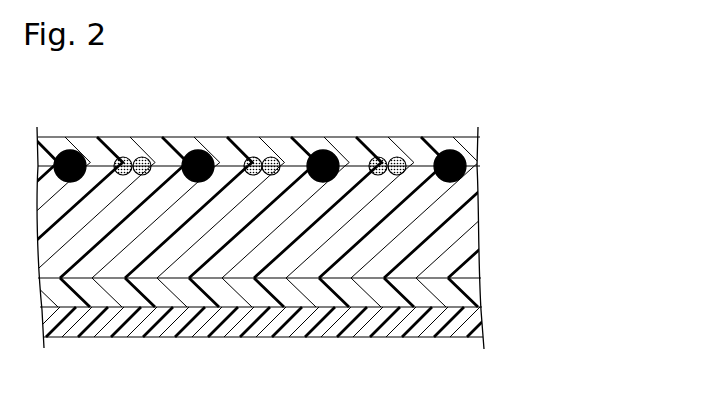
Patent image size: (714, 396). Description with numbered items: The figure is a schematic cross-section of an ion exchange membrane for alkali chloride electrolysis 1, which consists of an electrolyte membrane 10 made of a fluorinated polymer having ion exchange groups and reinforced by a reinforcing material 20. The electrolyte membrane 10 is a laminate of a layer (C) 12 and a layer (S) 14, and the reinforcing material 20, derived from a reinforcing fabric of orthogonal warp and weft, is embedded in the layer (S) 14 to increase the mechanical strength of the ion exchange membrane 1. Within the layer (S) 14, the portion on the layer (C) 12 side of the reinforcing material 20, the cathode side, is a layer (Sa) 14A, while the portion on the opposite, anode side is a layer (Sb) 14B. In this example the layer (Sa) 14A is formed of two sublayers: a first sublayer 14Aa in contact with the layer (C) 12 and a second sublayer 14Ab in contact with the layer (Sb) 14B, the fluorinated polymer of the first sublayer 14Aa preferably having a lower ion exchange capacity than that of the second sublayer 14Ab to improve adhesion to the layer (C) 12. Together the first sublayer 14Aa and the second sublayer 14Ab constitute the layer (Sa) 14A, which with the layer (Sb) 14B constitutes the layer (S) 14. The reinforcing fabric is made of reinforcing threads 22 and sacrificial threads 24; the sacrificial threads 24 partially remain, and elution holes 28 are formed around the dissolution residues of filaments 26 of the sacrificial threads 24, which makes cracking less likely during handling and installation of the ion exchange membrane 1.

The ion exchange membrane for alkali chloride electrolysis 1 is at (441, 116).
The electrolyte membrane 10 is at (604, 212).
The layer (C) 12 is at (483, 325).
The layer (S) 14 is at (574, 153).
The layer (Sa) 14A is at (535, 255).
The layer (Sa-1) 14Aa is at (452, 297).
The layer (Sa-2) 14Ab is at (452, 268).
The layer (Sb) 14B is at (478, 146).
The reinforcing material 20 is at (44, 157).
The reinforcing threads 22 is at (195, 151).
The sacrificial threads 24 is at (277, 102).
The filaments 26 is at (269, 157).
The elution holes 28 is at (319, 151).